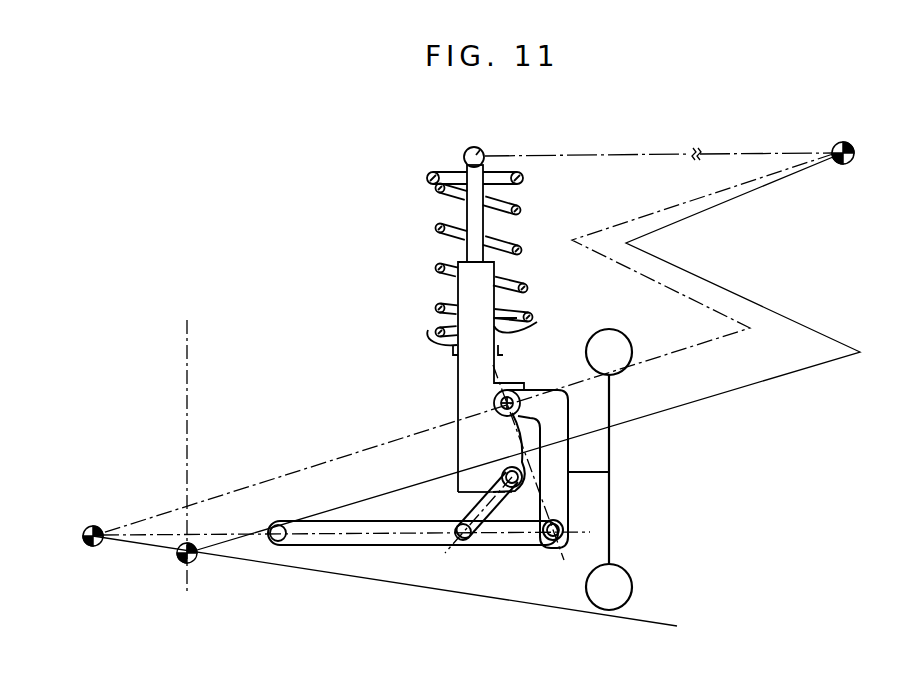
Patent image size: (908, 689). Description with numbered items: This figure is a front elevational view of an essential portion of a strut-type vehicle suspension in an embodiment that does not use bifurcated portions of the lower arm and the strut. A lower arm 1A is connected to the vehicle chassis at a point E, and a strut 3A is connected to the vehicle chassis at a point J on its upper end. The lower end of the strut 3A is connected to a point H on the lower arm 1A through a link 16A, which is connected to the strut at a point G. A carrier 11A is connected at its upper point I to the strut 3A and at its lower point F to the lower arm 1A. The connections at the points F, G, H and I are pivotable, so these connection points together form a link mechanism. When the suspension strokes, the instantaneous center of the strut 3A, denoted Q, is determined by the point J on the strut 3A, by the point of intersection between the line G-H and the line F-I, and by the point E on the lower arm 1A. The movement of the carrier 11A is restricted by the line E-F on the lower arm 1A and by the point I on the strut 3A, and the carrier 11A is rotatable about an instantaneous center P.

The strut 3A is at (467, 364).
The point J is at (479, 150).
The instantaneous center Q is at (842, 170).
The instantaneous center P is at (93, 521).
The point E is at (277, 519).
The lower arm 1A is at (370, 546).
The link 16A is at (468, 507).
The point H is at (467, 551).
The point G is at (506, 467).
The point I is at (495, 400).
The point F is at (542, 551).
The carrier 11A is at (563, 493).